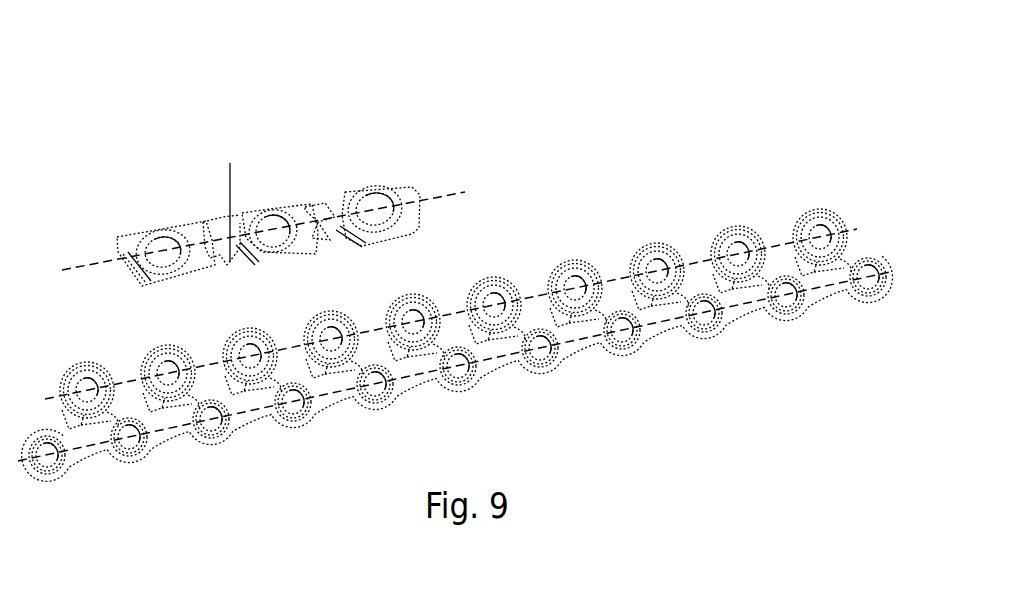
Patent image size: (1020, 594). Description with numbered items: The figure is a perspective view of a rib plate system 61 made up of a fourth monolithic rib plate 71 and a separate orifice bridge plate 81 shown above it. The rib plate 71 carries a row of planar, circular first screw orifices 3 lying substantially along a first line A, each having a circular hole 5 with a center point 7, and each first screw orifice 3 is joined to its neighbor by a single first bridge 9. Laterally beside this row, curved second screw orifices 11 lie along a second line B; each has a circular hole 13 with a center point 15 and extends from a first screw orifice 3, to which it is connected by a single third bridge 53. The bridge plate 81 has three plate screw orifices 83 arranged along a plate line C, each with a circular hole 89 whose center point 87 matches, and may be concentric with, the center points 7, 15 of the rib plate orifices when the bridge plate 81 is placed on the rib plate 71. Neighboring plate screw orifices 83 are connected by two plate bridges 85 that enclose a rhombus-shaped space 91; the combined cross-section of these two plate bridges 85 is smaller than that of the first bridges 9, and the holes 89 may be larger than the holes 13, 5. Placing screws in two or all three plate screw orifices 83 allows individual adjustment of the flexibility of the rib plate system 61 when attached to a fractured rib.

The rib plate system 61 is at (178, 72).
The orifice bridge plate 81 is at (410, 73).
The plate screw orifice 83 is at (124, 237).
The plate bridge 85 is at (203, 234).
The center point 87 is at (270, 228).
The space 91 is at (325, 218).
The circular hole 89 is at (373, 200).
The fourth monolithic rib plate 71 is at (564, 233).
The second screw orifice 11 is at (105, 382).
The third bridge 53 is at (172, 408).
The circular hole 13 is at (250, 358).
The center point 15 is at (328, 344).
The first screw orifice 3 is at (38, 478).
The circular hole 5 is at (127, 442).
The center point 7 is at (213, 420).
The first bridge 9 is at (262, 418).
The first line A is at (842, 284).
The second line B is at (775, 244).
The plate line C is at (455, 190).